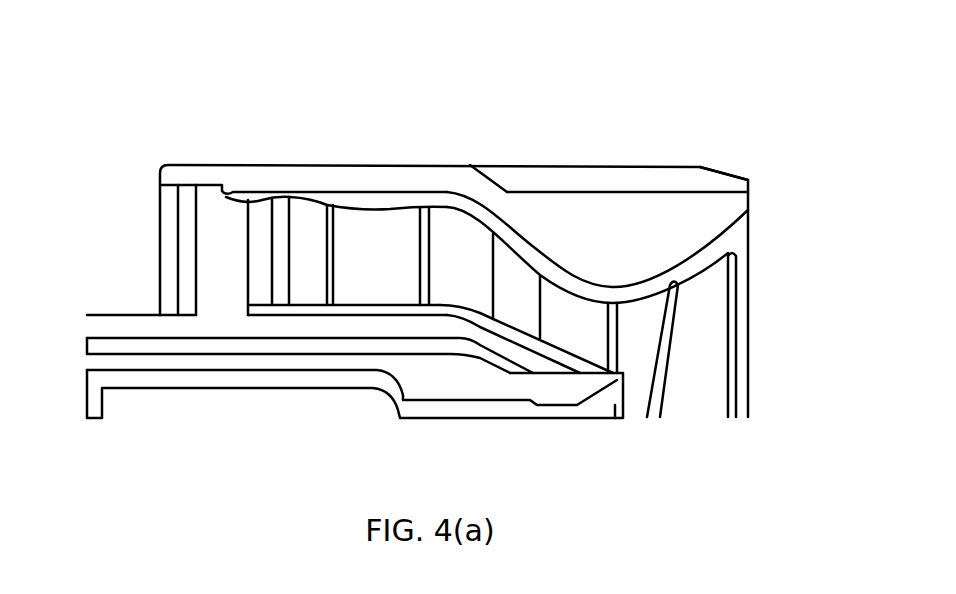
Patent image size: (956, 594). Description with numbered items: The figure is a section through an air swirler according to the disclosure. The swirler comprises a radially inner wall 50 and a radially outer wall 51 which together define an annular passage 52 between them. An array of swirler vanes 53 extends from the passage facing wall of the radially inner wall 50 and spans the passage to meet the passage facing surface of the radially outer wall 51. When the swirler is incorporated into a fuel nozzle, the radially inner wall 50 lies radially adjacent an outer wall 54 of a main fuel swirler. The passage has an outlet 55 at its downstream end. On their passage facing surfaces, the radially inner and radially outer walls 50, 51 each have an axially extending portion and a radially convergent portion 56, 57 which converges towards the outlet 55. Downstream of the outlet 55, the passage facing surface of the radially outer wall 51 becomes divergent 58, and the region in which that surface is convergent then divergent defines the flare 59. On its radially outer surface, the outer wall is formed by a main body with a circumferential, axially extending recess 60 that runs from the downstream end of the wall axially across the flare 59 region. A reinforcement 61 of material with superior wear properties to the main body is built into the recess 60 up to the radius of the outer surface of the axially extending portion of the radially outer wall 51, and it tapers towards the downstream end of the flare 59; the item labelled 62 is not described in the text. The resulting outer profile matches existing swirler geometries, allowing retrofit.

The radially inner wall 50 is at (302, 327).
The radially outer wall 51 is at (313, 180).
The annular passage 52 is at (588, 322).
The swirler vanes 53 is at (218, 243).
The outer wall of main fuel swirler 54 is at (453, 388).
The outlet 55 is at (620, 352).
The radially convergent portion 56 is at (485, 331).
The radially convergent portion 57 is at (537, 243).
The divergent portion 58 is at (683, 248).
The flare 59 is at (620, 238).
The recess 60 is at (480, 166).
The reinforcement 61 is at (605, 176).
The corner portion 62 is at (708, 170).